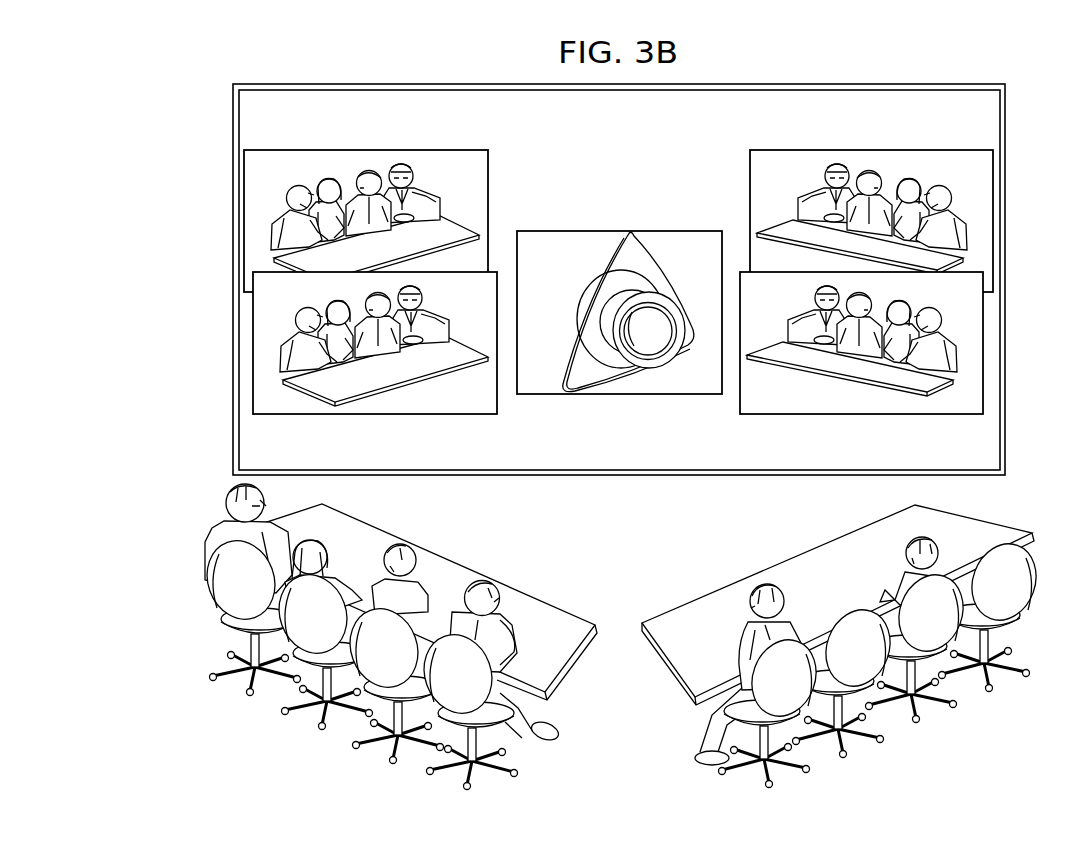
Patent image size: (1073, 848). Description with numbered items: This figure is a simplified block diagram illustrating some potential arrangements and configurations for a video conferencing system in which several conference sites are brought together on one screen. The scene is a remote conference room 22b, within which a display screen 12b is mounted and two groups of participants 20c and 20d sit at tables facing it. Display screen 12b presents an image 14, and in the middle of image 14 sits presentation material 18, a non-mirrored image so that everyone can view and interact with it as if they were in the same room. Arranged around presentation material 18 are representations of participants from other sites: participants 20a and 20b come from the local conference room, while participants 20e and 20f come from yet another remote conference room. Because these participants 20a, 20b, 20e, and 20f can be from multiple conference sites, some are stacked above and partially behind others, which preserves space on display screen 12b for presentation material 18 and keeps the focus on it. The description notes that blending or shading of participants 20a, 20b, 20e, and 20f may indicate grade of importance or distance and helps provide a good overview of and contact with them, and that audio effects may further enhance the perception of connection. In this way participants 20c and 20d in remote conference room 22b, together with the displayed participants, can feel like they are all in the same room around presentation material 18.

The display screen 12b is at (438, 70).
The image 14 is at (632, 137).
The presentation material 18 is at (589, 230).
The participant 20a is at (409, 398).
The participant 20b is at (827, 398).
The participant 20c is at (526, 576).
The participant 20d is at (715, 576).
The participant 20e is at (341, 170).
The participant 20f is at (895, 170).
The remote conference room 22b is at (156, 181).